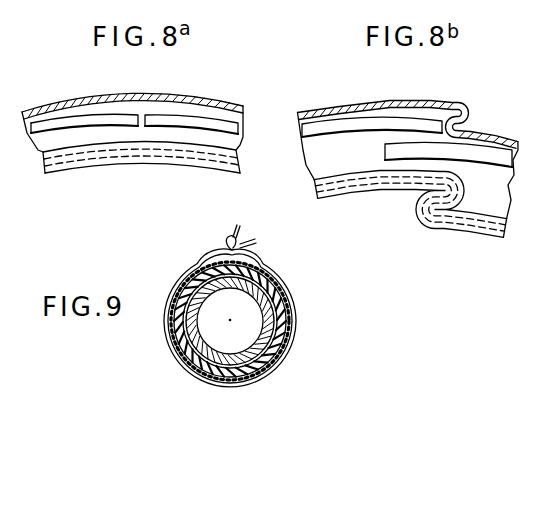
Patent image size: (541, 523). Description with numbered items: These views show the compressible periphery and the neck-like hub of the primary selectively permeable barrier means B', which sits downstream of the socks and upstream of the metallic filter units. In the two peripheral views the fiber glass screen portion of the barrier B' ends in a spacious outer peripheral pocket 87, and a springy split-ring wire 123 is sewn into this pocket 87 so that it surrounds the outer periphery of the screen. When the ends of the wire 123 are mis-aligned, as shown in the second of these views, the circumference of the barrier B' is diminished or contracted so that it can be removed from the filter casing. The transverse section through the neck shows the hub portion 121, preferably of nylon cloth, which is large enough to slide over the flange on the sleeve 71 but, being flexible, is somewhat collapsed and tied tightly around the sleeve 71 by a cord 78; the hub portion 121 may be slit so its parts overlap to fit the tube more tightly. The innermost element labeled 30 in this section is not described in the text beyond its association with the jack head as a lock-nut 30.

In FIG. 8A, the springy split-ring wire 123 is at (83, 120).
In FIG. 8B, the springy split-ring wire 123 is at (328, 132).
In FIG. 8A, the outer peripheral pocket 87 is at (172, 110).
In FIG. 8B, the outer peripheral pocket 87 is at (395, 113).
In FIG. 8A, the primary selectively permeable barrier means B' is at (141, 172).
In FIG. 8B, the primary selectively permeable barrier means B' is at (410, 204).
In FIG. 9, the hub portion 121 is at (182, 287).
In FIG. 9, the cord 78 is at (283, 283).
In FIG. 9, the sleeve 71 is at (280, 313).
In FIG. 9, the inner tube 30 is at (200, 335).